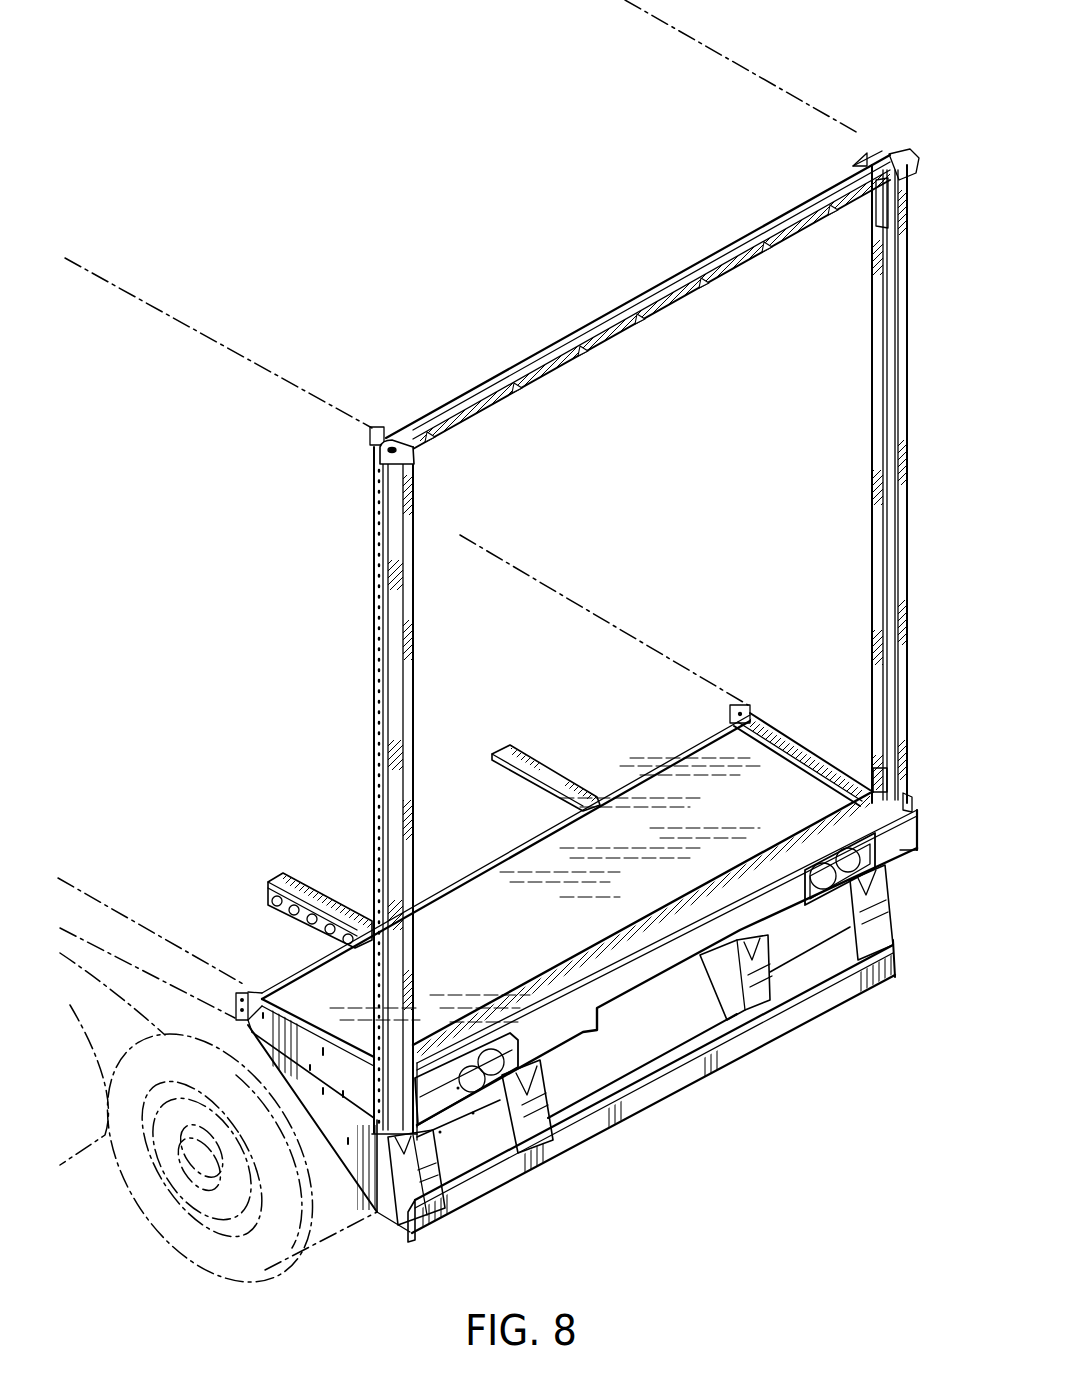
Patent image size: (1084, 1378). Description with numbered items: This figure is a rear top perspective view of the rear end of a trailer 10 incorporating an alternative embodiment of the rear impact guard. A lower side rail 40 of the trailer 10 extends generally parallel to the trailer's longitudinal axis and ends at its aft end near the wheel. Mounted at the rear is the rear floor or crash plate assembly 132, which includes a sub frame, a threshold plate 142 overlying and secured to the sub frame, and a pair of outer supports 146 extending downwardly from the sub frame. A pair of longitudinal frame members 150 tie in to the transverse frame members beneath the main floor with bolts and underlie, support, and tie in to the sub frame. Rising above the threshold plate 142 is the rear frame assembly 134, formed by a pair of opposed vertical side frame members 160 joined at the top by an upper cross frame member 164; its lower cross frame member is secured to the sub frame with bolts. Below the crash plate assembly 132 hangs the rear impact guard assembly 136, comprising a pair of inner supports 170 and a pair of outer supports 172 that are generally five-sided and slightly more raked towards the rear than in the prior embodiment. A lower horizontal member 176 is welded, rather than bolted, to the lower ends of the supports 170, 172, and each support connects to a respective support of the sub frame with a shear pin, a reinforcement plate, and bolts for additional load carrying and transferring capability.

The trailer 10 is at (796, 66).
The lower side rails 40 is at (122, 916).
The rear floor/crash plate assembly 132 is at (567, 856).
The rear frame assembly 134 is at (658, 616).
The rear impact guard assembly 136 is at (667, 1018).
The threshold plate 142 is at (554, 928).
The outer supports 146 is at (280, 997).
The longitudinal frame members 150 is at (508, 753).
The vertical side frame members 160 is at (875, 504).
The upper cross frame member 164 is at (636, 318).
The inner supports 170 is at (764, 965).
The outer supports 172 is at (884, 918).
The lower horizontal member 176 is at (660, 1087).